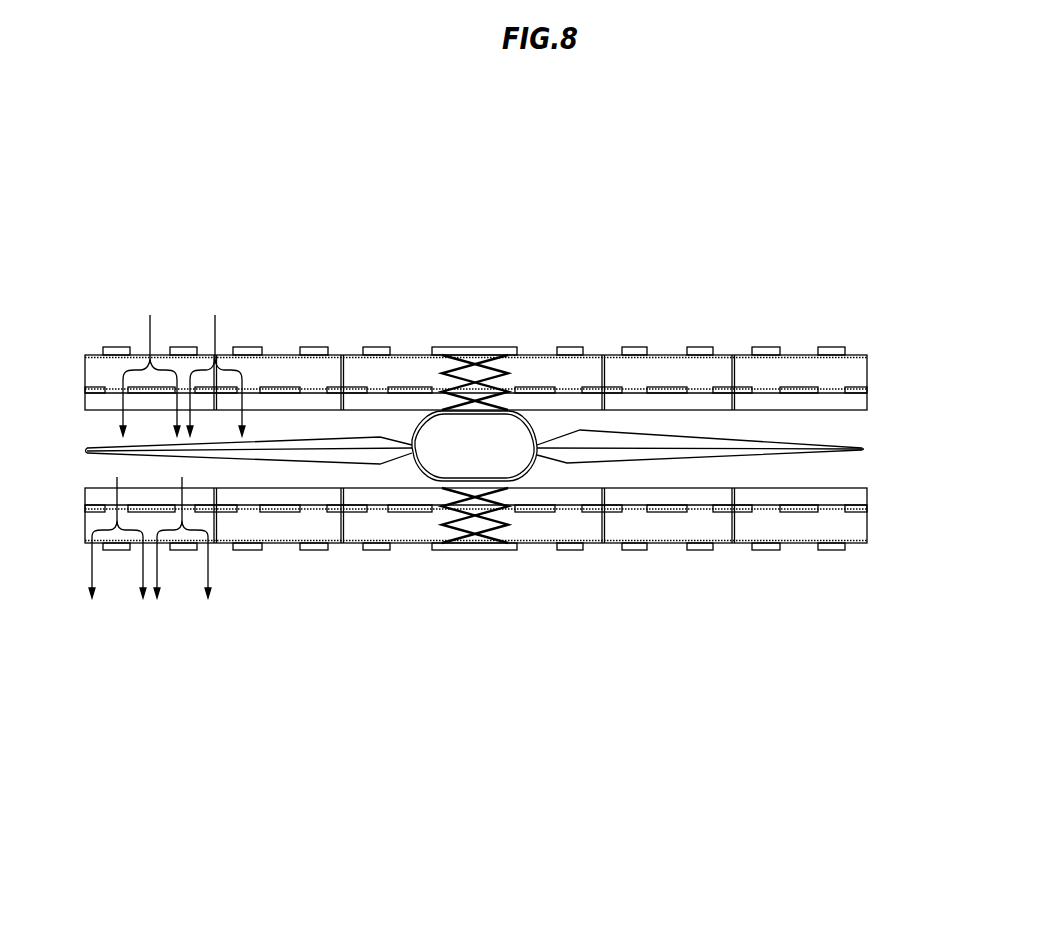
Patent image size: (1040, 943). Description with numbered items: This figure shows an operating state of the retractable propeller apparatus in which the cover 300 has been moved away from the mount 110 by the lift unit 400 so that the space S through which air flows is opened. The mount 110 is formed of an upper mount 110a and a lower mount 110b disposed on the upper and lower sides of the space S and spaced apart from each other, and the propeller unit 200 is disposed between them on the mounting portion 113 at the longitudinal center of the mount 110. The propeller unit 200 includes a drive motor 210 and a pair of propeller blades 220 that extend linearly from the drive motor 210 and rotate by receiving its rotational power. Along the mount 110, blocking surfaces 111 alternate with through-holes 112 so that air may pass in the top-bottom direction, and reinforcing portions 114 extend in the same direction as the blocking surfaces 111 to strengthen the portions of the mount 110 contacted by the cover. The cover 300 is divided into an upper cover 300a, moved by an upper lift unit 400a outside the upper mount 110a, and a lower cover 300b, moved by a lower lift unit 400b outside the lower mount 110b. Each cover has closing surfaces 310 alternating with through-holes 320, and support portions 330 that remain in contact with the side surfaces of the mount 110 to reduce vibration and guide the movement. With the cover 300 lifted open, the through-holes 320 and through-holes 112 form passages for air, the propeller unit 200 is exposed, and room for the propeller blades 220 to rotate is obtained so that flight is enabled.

The mount 110 is at (554, 462).
The upper mount 110a is at (554, 337).
The lower mount 110b is at (554, 581).
The blocking surfaces 111 is at (715, 388).
The through-holes 112 is at (373, 390).
The mounting portion 113 is at (442, 548).
The reinforcing portions 114 is at (195, 400).
The propeller unit 200 is at (475, 567).
The drive motor 210 is at (505, 447).
The propeller blades 220 is at (688, 452).
The cover 300 is at (807, 447).
The upper cover 300a is at (803, 372).
The lower cover 300b is at (768, 527).
The closing surfaces 310 is at (275, 511).
The through-holes 320 is at (375, 511).
The support portions 330 is at (592, 397).
The lift unit 400 is at (468, 481).
The upper lift unit 400a is at (445, 360).
The lower lift unit 400b is at (486, 556).
The space S is at (752, 427).